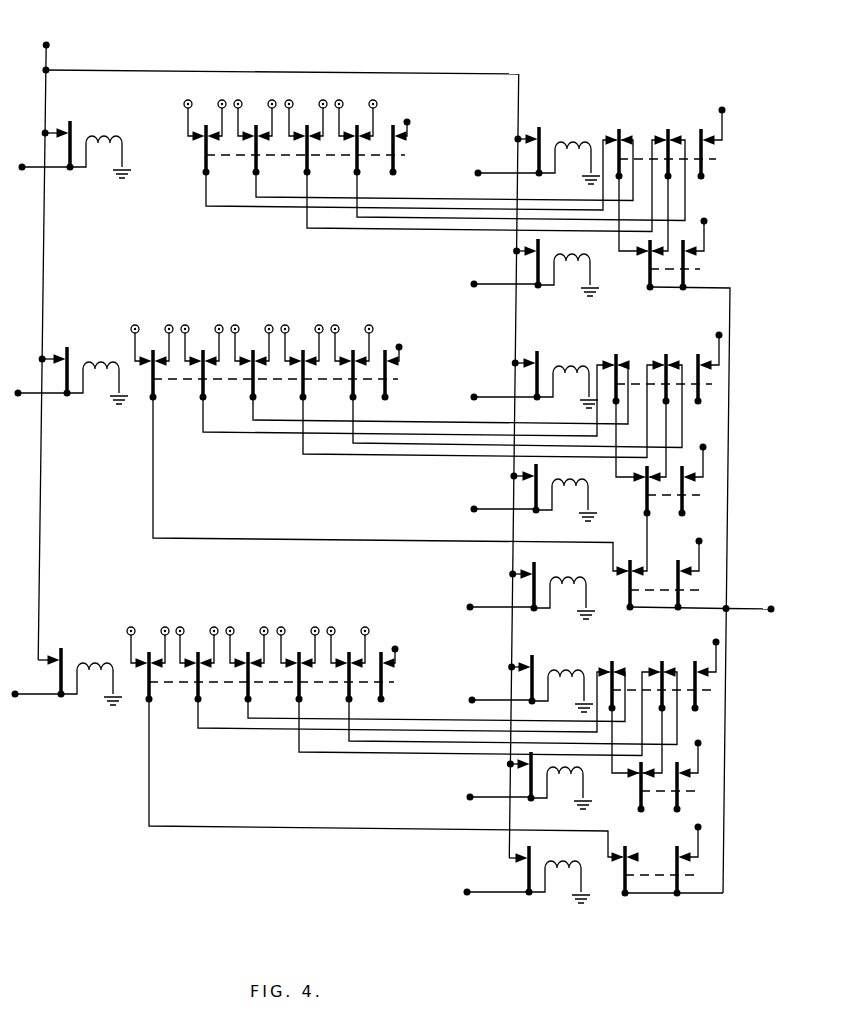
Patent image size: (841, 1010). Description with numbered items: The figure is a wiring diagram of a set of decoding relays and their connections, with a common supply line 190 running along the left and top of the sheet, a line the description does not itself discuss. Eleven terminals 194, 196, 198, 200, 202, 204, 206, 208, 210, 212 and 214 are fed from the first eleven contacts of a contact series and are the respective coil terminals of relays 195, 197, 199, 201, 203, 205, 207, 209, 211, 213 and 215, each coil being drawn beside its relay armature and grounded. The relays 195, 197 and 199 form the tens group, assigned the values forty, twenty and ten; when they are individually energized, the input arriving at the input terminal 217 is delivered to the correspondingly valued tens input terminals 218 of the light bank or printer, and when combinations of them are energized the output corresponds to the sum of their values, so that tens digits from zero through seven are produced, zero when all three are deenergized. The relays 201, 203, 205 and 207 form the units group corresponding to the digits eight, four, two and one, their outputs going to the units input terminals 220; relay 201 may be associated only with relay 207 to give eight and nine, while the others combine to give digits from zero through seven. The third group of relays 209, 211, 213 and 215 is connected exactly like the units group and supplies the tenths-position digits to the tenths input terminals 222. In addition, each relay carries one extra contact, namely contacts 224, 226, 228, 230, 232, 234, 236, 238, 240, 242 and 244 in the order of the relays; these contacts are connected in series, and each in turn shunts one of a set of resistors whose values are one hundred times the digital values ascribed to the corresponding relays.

The supply bus 190 is at (46, 43).
The terminal 194 is at (472, 283).
The relay 195 is at (568, 260).
The terminal 196 is at (476, 176).
The relay 197 is at (569, 148).
The terminal 198 is at (22, 170).
The relay 199 is at (100, 142).
The terminal 200 is at (468, 605).
The relay 201 is at (565, 584).
The terminal 202 is at (472, 508).
The relay 203 is at (585, 488).
The terminal 204 is at (472, 396).
The relay 205 is at (567, 372).
The terminal 206 is at (18, 396).
The relay 207 is at (97, 368).
The terminal 208 is at (465, 891).
The relay 209 is at (578, 876).
The terminal 210 is at (468, 796).
The relay 211 is at (580, 782).
The terminal 212 is at (470, 699).
The relay 213 is at (563, 677).
The terminal 214 is at (15, 697).
The relay 215 is at (91, 670).
The input terminal 217 is at (771, 612).
The tens input terminals 218 is at (410, 105).
The units input terminals 220 is at (407, 328).
The tenths input terminals 222 is at (405, 633).
The additional contact 224 is at (700, 269).
The additional contact 226 is at (716, 159).
The additional contact 228 is at (395, 156).
The additional contact 230 is at (700, 590).
The additional contact 232 is at (700, 496).
The additional contact 234 is at (712, 386).
The additional contact 236 is at (387, 382).
The additional contact 238 is at (700, 876).
The additional contact 240 is at (700, 792).
The additional contact 242 is at (712, 692).
The additional contact 244 is at (383, 688).